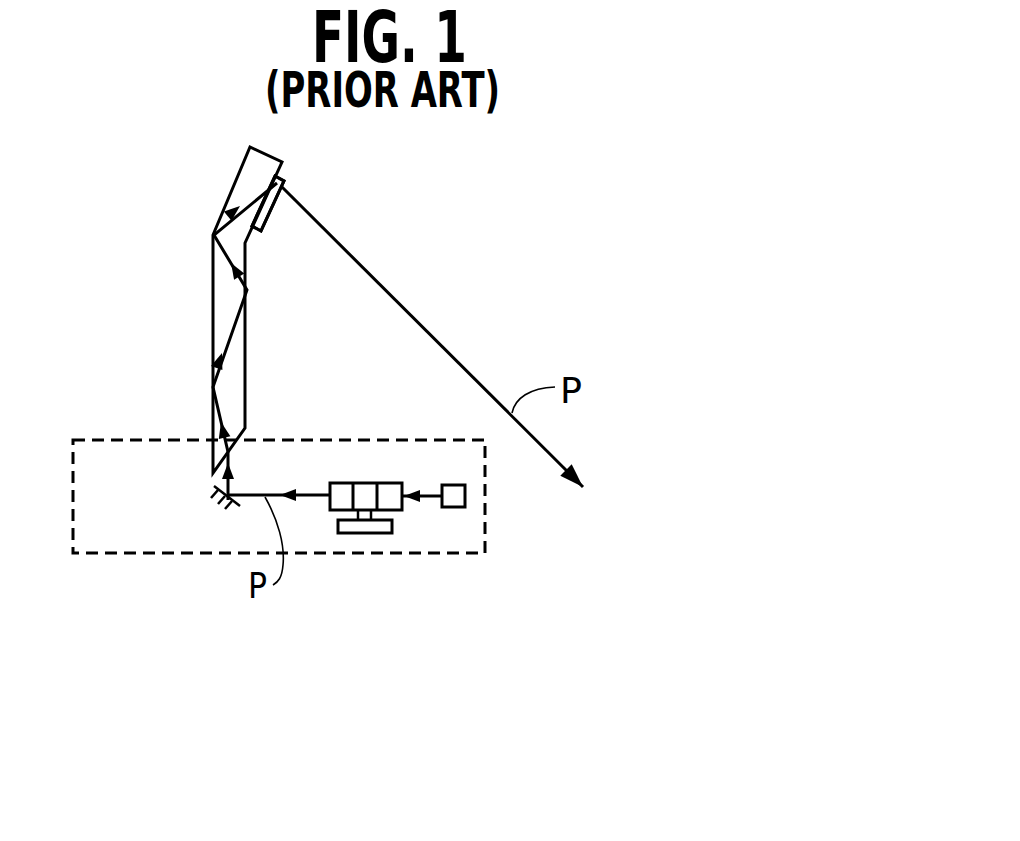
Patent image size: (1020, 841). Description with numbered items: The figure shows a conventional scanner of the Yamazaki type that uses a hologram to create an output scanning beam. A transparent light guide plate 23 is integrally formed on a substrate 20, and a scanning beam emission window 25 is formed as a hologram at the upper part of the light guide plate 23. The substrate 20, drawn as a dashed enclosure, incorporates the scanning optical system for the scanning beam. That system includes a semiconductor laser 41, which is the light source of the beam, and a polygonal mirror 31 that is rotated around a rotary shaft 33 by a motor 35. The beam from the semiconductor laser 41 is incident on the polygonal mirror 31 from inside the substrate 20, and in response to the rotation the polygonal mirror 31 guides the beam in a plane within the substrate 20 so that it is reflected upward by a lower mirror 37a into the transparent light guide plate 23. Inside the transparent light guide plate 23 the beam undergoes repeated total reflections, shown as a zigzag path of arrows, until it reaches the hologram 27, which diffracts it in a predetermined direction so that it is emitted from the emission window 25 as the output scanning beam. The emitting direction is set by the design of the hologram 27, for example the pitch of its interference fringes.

The substrate 20 is at (333, 450).
The transparent light guide plate 23 is at (233, 367).
The scanning beam emission window 25 is at (283, 183).
The hologram 27 is at (268, 203).
The polygonal mirror 31 is at (406, 562).
The rotary shaft 33 is at (360, 520).
The motor 35 is at (377, 528).
The lower mirror 37a is at (227, 507).
The semiconductor laser 41 is at (465, 498).